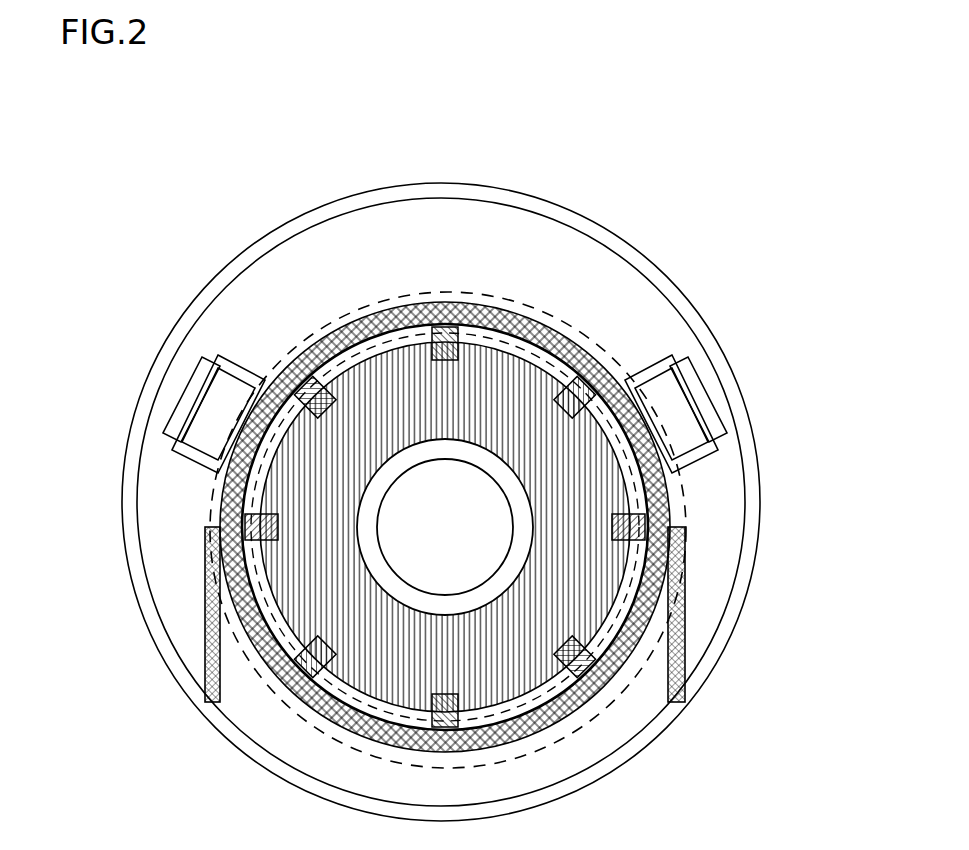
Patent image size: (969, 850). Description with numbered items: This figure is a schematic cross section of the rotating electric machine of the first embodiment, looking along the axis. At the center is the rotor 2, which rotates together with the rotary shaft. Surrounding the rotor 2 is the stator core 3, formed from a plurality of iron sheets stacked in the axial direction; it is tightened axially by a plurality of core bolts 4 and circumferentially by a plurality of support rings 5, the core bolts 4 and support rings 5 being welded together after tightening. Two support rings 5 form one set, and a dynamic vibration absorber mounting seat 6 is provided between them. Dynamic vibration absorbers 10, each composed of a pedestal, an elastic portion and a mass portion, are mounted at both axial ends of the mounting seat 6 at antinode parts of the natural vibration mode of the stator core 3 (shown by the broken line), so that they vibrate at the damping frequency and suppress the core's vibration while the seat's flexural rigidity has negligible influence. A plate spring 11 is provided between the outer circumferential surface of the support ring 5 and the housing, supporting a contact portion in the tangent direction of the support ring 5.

The rotor 2 is at (403, 590).
The stator core 3 is at (500, 662).
The core bolt 4 is at (672, 517).
The support ring 5 is at (450, 300).
The dynamic vibration absorber mounting seat 6 is at (620, 383).
The dynamic vibration absorber 10 is at (700, 373).
The plate spring 11 is at (673, 682).